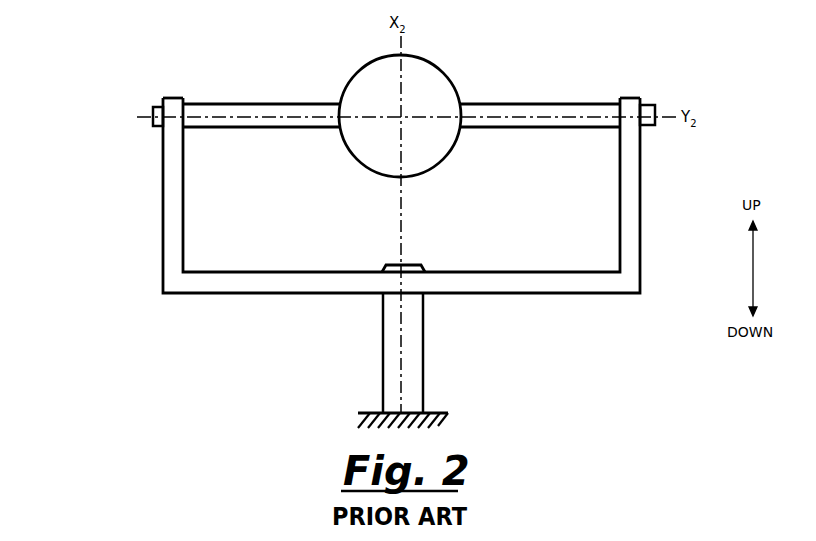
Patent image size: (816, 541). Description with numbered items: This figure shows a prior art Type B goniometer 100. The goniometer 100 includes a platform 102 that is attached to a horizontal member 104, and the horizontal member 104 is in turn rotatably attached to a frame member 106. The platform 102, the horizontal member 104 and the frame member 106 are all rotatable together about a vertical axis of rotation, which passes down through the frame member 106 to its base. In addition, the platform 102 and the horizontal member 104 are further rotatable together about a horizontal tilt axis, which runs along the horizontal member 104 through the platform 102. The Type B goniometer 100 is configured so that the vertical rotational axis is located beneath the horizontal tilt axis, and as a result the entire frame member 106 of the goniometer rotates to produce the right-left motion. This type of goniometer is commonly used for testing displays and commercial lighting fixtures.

The Type B goniometer 100 is at (119, 90).
The platform 102 is at (446, 69).
The horizontal member 104 is at (284, 103).
The frame member 106 is at (163, 213).